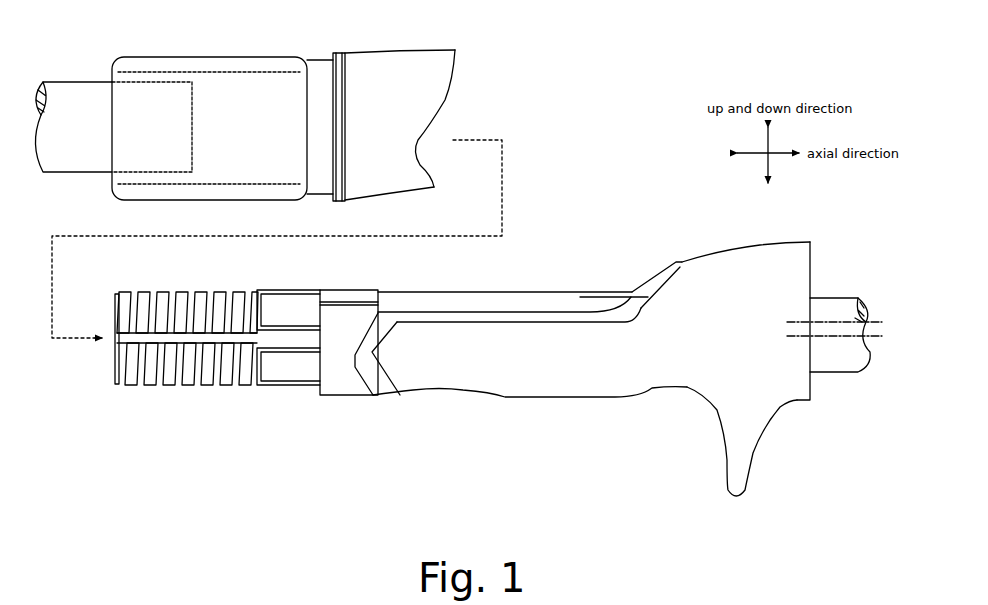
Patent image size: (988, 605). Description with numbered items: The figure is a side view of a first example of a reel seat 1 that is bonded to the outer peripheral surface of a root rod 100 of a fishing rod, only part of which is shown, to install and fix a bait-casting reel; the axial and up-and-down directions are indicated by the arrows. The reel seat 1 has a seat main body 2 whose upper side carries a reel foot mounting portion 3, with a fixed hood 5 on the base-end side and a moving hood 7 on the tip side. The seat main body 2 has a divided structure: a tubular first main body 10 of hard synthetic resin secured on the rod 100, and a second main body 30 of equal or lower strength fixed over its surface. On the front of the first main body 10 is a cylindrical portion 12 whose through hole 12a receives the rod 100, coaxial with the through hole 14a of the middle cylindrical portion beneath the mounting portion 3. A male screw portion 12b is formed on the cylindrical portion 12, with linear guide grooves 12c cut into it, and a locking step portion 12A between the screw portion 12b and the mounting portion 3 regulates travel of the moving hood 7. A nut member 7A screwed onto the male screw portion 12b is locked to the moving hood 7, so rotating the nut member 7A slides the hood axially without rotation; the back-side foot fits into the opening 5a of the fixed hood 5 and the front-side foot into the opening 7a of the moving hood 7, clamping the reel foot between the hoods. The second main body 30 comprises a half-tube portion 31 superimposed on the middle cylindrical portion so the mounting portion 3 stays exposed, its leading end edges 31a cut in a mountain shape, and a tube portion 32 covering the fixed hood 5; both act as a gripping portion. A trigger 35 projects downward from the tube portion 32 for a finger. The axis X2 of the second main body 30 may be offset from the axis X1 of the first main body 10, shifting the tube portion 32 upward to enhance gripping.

The reel seat 1 is at (568, 232).
The seat main body 2 is at (408, 289).
The reel foot mounting portion 3 is at (478, 292).
The fixed hood 5 is at (717, 261).
The opening 5a is at (656, 283).
The moving hood 7 is at (409, 108).
The nut member 7A is at (150, 60).
The opening 7a is at (455, 80).
The first main body 10 is at (239, 367).
The cylindrical portion 12 is at (290, 376).
The through hole 12a is at (118, 372).
The male screw portion 12b is at (188, 388).
The guide grooves 12c is at (128, 338).
The locking step portion 12A is at (350, 388).
The through hole 14a is at (438, 387).
The leading end edges 31a is at (388, 372).
The second main body 30 is at (582, 355).
The half-tube portion 31 is at (456, 366).
The tube portion 32 is at (708, 366).
The trigger 35 is at (753, 455).
The rod 100 is at (62, 82).
The axis X1 is at (844, 337).
The axis X2 is at (844, 322).